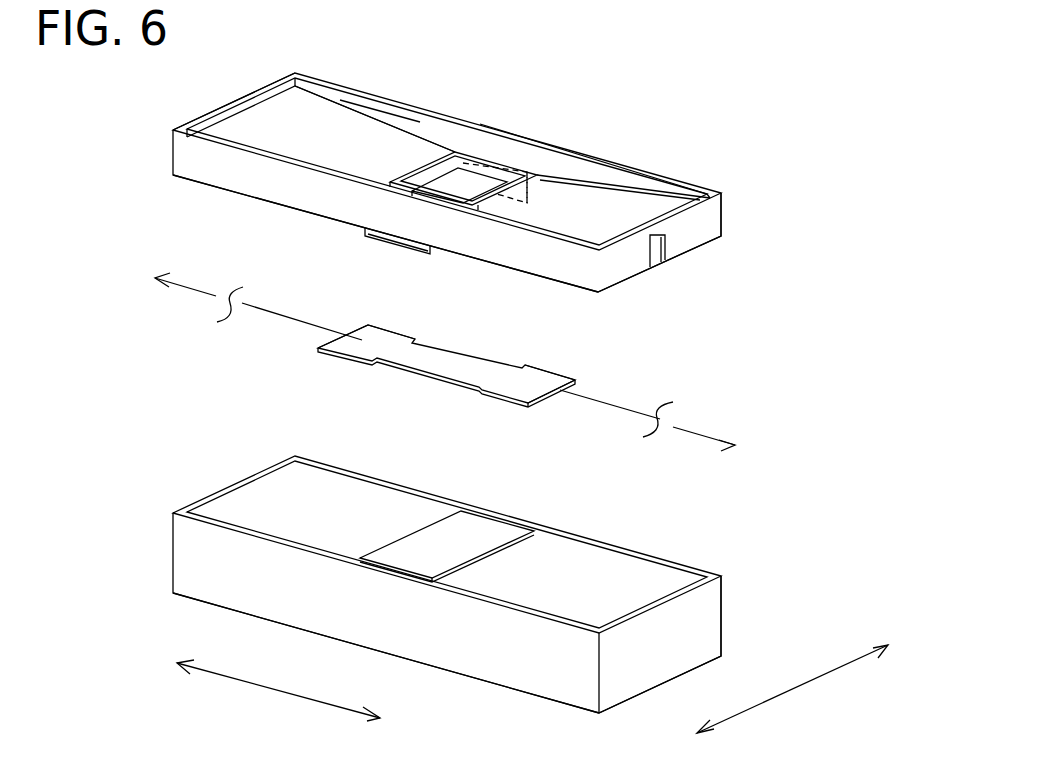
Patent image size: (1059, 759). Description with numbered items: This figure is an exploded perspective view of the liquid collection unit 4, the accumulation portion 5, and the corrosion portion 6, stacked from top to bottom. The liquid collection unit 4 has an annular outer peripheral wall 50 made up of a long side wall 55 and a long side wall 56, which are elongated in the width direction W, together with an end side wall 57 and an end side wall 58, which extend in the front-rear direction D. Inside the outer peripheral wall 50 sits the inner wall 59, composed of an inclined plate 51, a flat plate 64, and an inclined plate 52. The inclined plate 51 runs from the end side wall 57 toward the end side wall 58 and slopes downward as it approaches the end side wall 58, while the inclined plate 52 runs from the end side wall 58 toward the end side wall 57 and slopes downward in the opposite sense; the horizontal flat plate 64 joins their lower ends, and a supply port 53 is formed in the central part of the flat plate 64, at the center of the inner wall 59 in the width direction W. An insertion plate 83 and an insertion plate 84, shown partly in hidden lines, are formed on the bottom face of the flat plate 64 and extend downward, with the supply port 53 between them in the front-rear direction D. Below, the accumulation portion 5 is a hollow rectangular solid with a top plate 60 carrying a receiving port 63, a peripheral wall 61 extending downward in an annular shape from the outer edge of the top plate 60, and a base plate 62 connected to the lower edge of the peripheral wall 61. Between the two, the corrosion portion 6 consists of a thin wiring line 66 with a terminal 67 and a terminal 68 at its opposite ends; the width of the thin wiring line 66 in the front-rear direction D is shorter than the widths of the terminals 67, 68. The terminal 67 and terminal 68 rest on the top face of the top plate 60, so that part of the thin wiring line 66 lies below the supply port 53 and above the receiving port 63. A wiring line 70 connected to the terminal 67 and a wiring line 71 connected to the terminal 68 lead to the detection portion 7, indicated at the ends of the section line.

The liquid collection unit 4 is at (487, 149).
The accumulation portion 5 is at (464, 556).
The corrosion portion 6 is at (475, 340).
The detection portion 7 is at (451, 363).
The outer peripheral wall 50 is at (676, 168).
The inclined plate 51 is at (628, 196).
The inclined plate 52 is at (318, 103).
The supply port 53 is at (460, 162).
The long side wall 55 is at (288, 193).
The long side wall 56 is at (592, 148).
The end side wall 57 is at (705, 230).
The end side wall 58 is at (241, 97).
The inner wall 59 is at (385, 133).
The top plate 60 is at (632, 565).
The peripheral wall 61 is at (690, 622).
The base plate 62 is at (490, 684).
The receiving port 63 is at (475, 537).
The flat plate 64 is at (498, 172).
The thin wiring line 66 is at (445, 362).
The terminal 67 is at (533, 373).
The terminal 68 is at (385, 333).
The wiring line 70 is at (637, 413).
The wiring line 71 is at (312, 323).
The insertion plate 83 is at (407, 250).
The insertion plate 84 is at (528, 172).
The width direction W is at (278, 693).
The front-rear direction D is at (792, 689).